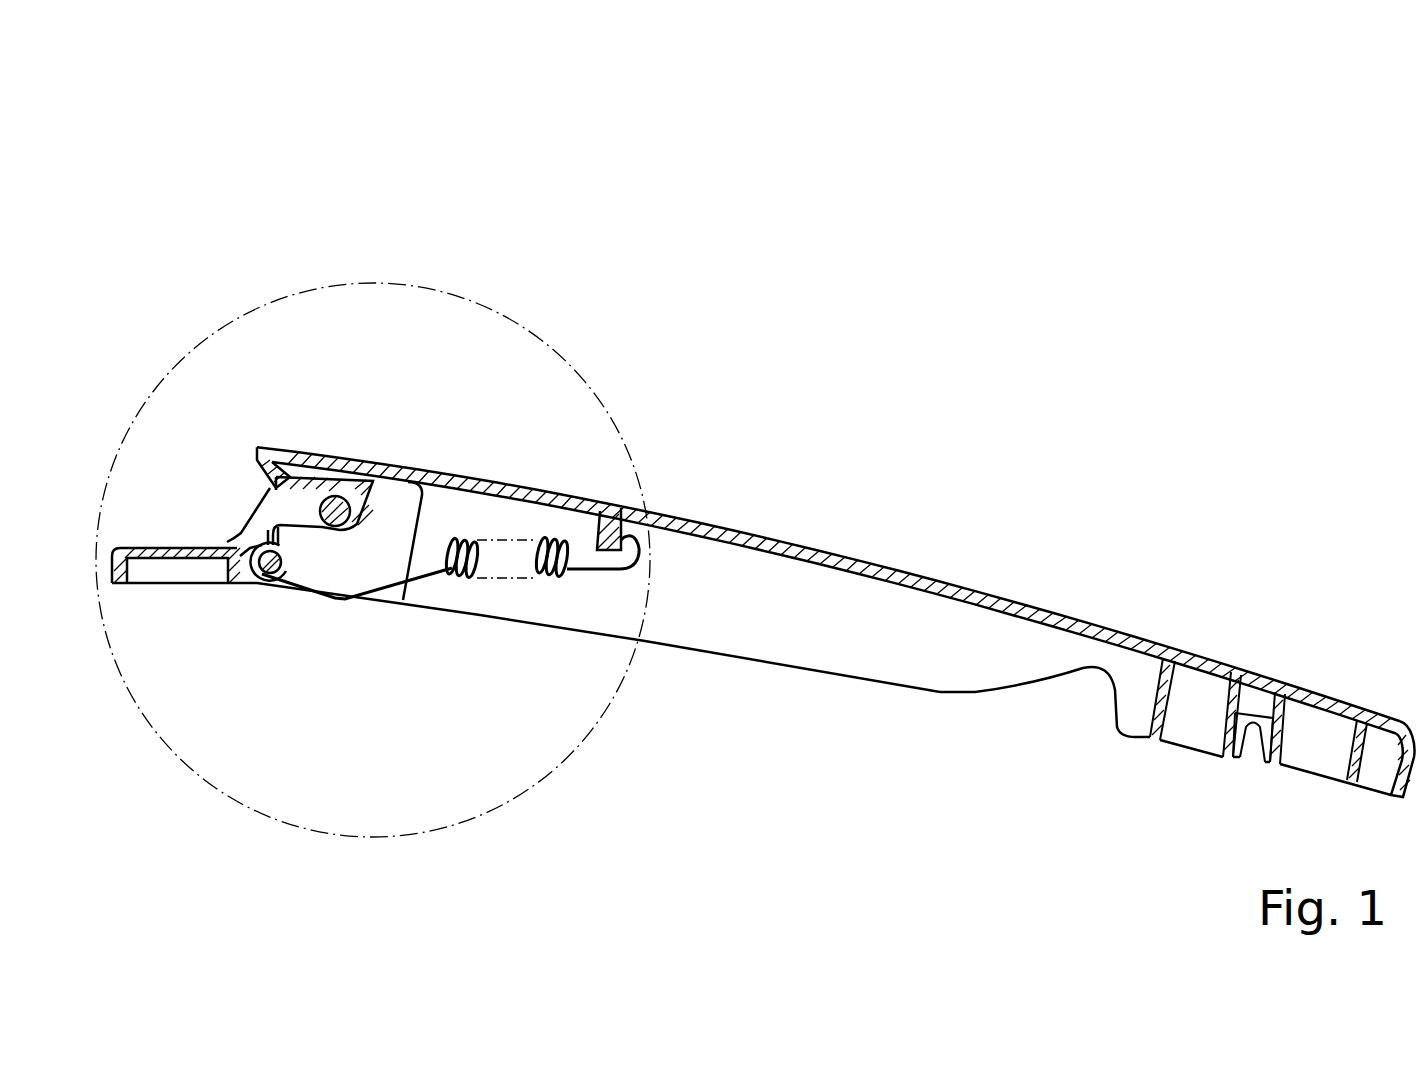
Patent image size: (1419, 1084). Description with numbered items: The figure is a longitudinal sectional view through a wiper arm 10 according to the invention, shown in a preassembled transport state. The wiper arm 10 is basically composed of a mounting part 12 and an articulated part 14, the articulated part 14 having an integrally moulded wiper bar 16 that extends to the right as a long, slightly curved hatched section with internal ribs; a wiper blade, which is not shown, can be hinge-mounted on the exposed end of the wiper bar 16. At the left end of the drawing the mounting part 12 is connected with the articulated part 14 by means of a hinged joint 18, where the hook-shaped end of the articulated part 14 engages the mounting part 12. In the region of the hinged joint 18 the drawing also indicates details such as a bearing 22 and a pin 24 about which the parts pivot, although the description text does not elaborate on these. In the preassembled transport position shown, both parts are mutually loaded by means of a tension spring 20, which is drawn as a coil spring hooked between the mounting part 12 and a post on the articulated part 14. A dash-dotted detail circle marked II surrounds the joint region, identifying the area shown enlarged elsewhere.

The wiper arm 10 is at (642, 382).
The mounting part 12 is at (187, 573).
The articulated part 14 is at (372, 468).
The wiper bar 16 is at (987, 597).
The hinged joint 18 is at (265, 437).
The tension spring 20 is at (498, 553).
The bearing 22 is at (322, 512).
The pivot pin 24 is at (337, 480).
The detail circle II is at (518, 323).